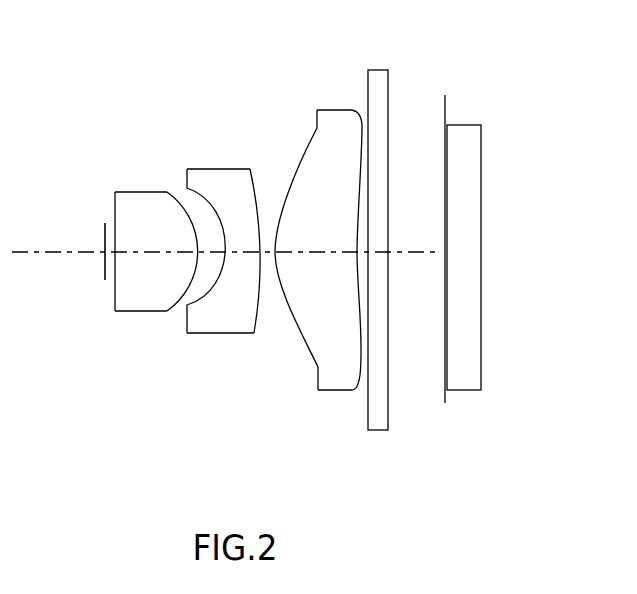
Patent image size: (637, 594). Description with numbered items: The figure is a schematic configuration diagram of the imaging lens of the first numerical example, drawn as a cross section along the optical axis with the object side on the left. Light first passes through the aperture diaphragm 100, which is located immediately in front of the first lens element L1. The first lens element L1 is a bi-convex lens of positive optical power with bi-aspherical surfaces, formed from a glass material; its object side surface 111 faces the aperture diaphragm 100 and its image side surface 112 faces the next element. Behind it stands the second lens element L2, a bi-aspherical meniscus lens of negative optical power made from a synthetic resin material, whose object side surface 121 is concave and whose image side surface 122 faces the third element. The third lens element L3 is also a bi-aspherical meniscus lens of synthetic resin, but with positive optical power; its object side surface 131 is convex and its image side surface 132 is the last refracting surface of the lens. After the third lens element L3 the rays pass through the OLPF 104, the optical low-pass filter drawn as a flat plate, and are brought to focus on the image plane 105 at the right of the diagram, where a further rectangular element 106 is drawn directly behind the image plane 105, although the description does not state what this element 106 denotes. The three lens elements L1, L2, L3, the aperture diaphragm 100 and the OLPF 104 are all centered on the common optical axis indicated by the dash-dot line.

The aperture diaphragm 100 is at (100, 227).
The first lens element L1 is at (115, 250).
The second lens element L2 is at (204, 260).
The third lens element L3 is at (313, 265).
The object side surface of the first lens element 111 is at (113, 290).
The image side surface of the first lens element 112 is at (177, 293).
The object side surface of the second lens element 121 is at (200, 300).
The image side surface of the second lens element 122 is at (260, 310).
The object side surface of the third lens element 131 is at (307, 347).
The image side surface of the third lens element 132 is at (360, 357).
The OLPF 104 is at (377, 85).
The image plane 105 is at (445, 120).
The image pickup element 106 is at (483, 207).